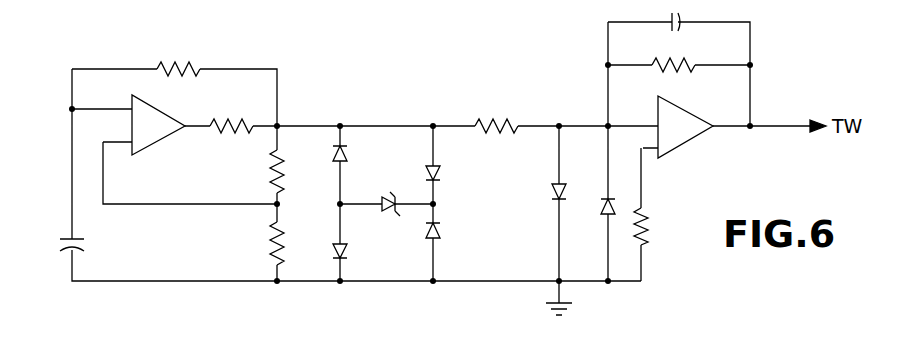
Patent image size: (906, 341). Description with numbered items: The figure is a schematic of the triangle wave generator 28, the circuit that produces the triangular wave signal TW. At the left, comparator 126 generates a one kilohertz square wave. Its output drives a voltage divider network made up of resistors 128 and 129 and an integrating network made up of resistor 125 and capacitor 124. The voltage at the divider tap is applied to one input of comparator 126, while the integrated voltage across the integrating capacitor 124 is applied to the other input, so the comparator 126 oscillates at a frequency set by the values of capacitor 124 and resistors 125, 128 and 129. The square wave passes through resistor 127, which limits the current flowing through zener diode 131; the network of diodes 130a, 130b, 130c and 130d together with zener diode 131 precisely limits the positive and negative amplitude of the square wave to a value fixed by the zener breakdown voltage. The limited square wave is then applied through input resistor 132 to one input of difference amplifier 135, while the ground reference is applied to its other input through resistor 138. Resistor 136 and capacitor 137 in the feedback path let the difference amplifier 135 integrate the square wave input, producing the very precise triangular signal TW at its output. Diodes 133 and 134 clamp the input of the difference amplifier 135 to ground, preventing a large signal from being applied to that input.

The triangle wave generator 28 is at (446, 98).
The integrating capacitor 124 is at (56, 240).
The resistor 125 is at (192, 56).
The comparator 126 is at (166, 97).
The resistor 127 is at (217, 141).
The resistor 128 is at (262, 181).
The resistor 129 is at (262, 247).
The diode 130a is at (326, 149).
The diode 130b is at (330, 246).
The diode 130c is at (446, 231).
The diode 130d is at (446, 179).
The zener diode 131 is at (390, 192).
The input resistor 132 is at (490, 98).
The diode 133 is at (550, 197).
The diode 134 is at (600, 192).
The difference amplifier 135 is at (690, 147).
The resistor 136 is at (684, 78).
The capacitor 137 is at (680, 36).
The resistor 138 is at (658, 216).